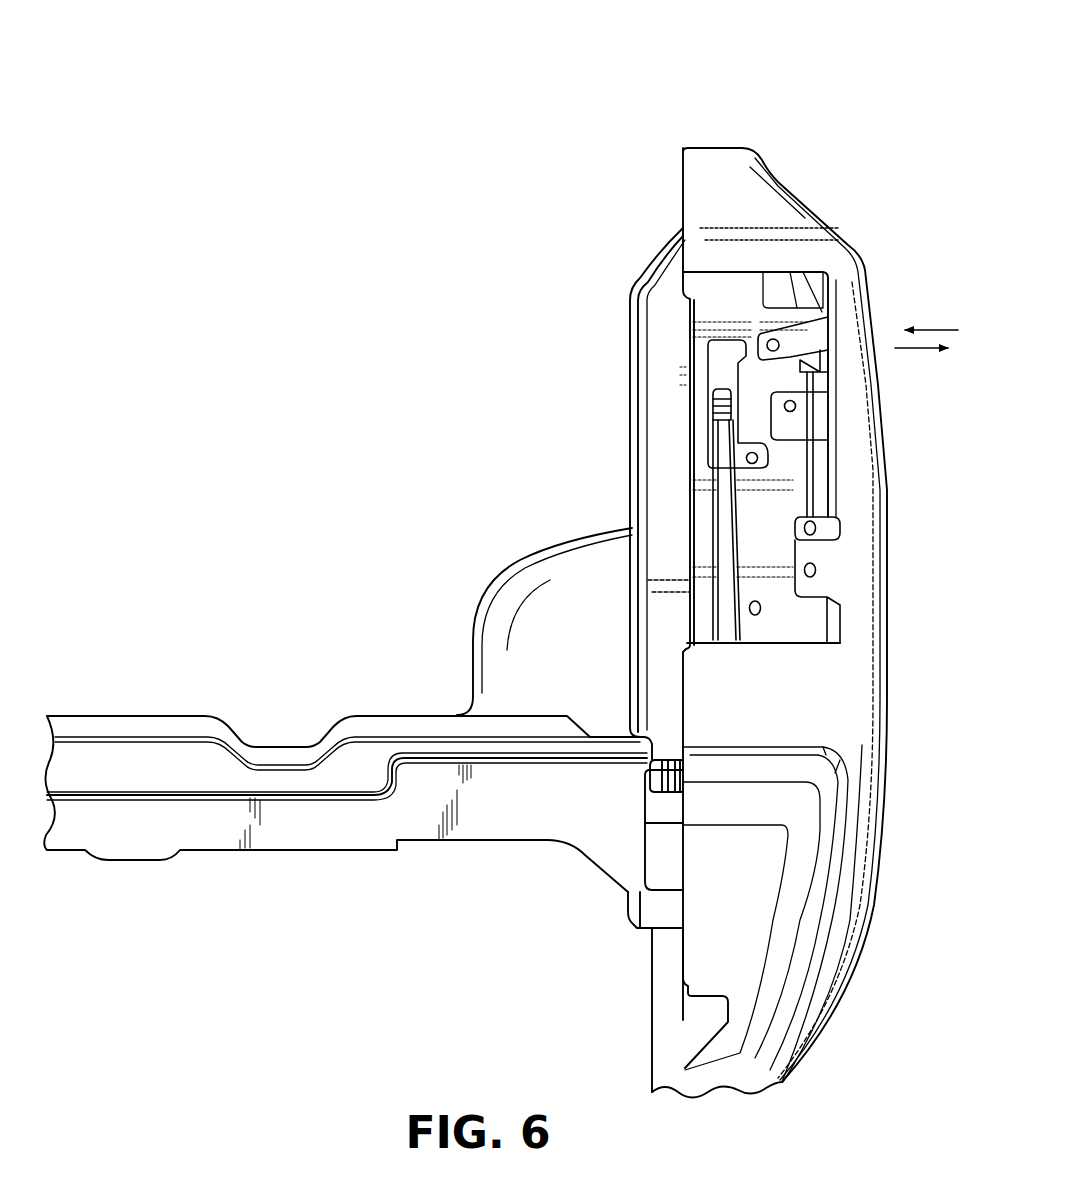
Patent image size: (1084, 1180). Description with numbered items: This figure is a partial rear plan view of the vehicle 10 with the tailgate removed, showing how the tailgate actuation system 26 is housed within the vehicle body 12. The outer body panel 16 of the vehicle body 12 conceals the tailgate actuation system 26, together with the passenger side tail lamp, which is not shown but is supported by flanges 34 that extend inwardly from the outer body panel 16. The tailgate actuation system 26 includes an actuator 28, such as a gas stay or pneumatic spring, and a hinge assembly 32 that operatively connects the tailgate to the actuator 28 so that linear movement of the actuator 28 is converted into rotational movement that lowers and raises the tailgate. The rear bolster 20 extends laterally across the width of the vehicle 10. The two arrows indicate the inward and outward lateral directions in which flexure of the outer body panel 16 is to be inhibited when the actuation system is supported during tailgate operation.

The vehicle 10 is at (712, 92).
The vehicle body 12 is at (760, 150).
The outer body panel 16 is at (882, 445).
The rear bolster 20 is at (472, 812).
The tailgate actuation system 26 is at (752, 558).
The actuator 28 is at (745, 580).
The hinge assembly 32 is at (636, 797).
The flanges 34 is at (805, 547).